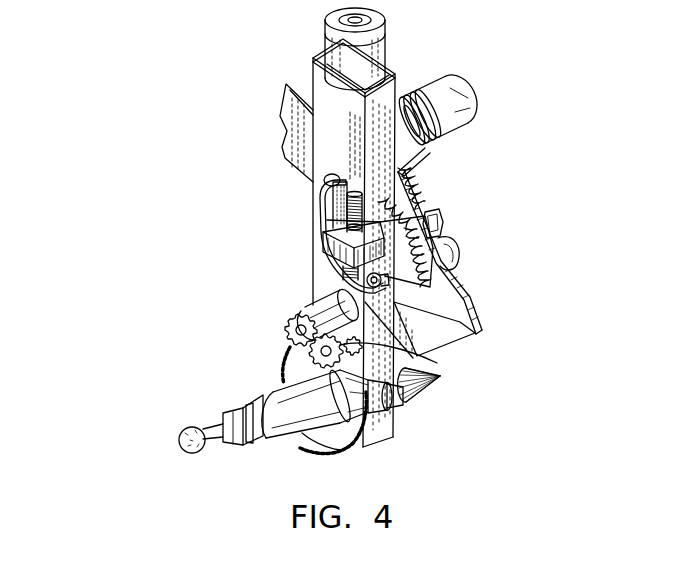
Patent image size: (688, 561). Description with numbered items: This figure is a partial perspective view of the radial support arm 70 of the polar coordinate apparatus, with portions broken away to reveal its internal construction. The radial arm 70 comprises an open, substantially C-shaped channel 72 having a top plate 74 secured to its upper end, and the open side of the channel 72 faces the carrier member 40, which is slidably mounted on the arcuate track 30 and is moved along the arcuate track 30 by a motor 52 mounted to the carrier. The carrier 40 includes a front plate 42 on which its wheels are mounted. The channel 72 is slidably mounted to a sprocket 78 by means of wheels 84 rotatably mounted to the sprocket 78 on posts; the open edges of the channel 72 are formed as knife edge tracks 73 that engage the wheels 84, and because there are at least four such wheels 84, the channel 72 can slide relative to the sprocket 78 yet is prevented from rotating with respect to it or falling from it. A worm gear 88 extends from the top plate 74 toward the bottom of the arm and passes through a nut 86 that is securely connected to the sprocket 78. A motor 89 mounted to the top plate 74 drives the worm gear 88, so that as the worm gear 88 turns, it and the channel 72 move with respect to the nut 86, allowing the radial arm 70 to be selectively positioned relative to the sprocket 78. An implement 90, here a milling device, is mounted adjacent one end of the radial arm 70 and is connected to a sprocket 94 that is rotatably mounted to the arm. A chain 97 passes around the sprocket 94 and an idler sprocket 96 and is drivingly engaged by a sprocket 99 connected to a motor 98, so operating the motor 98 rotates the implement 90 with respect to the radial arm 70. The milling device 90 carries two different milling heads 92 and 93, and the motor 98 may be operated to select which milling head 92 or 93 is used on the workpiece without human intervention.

The arcuate track 30 is at (440, 330).
The carrier member 40 is at (416, 145).
The front plate 42 is at (441, 220).
The motor 52 is at (452, 108).
The radial support arm 70 is at (292, 70).
The C-shaped channel 72 is at (349, 138).
The knife edge tracks 73 is at (348, 205).
The top plate 74 is at (322, 57).
The sprocket 78 is at (403, 278).
The wheels 84 is at (322, 268).
The nut 86 is at (452, 240).
The worm gear 88 is at (425, 207).
The motor 89 is at (373, 50).
The implement 90 is at (290, 388).
The milling head 92 is at (180, 434).
The milling head 93 is at (440, 377).
The sprocket 94 is at (338, 443).
The idler sprocket 96 is at (437, 363).
The chain 97 is at (313, 447).
The motor 98 is at (330, 303).
The sprocket 99 is at (286, 330).